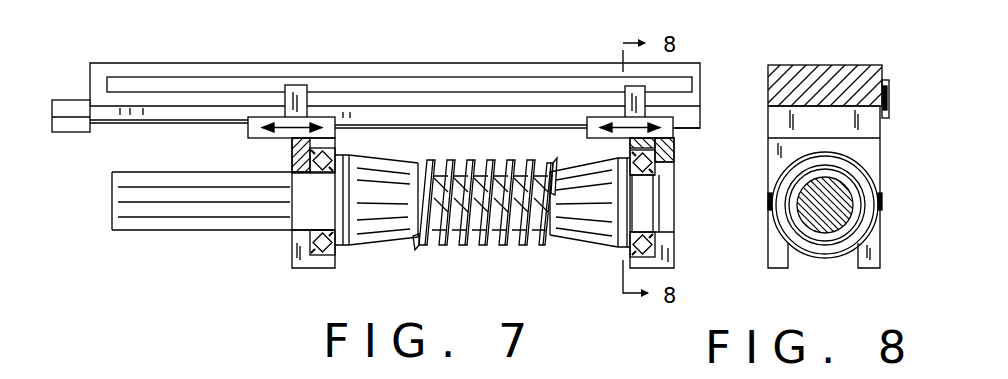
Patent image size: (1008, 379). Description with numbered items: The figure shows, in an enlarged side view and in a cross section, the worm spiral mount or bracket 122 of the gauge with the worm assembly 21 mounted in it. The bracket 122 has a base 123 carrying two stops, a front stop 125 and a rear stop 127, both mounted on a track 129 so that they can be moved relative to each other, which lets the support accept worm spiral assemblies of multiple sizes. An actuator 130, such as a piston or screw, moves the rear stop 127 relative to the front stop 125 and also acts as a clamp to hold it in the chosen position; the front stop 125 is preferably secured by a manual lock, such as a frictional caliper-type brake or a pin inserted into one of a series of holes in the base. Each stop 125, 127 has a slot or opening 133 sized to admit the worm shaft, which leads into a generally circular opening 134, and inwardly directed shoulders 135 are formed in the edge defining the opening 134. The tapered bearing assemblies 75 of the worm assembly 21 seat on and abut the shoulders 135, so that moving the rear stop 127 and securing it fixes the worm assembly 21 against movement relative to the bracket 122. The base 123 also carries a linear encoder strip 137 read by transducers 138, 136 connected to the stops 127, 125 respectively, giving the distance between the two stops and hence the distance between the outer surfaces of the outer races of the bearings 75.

In FIG. 7, the worm assembly 21 is at (491, 252).
In FIG. 7, the tapered bearing assemblies 75 is at (628, 152).
In FIG. 7, the worm spiral mount or bracket 122 is at (185, 50).
In FIG. 7, the base 123 is at (517, 72).
In FIG. 8, the base 123 is at (768, 83).
In FIG. 7, the front stop 125 is at (674, 162).
In FIG. 8, the front stop 125 is at (882, 153).
In FIG. 7, the rear stop 127 is at (292, 145).
In FIG. 7, the track 129 is at (112, 121).
In FIG. 8, the track 129 is at (768, 118).
In FIG. 7, the actuator 130 is at (72, 100).
In FIG. 8, the slot or opening 133 is at (790, 262).
In FIG. 7, the circular opening 134 is at (662, 174).
In FIG. 8, the circular opening 134 is at (880, 180).
In FIG. 7, the shoulders 135 is at (338, 157).
In FIG. 7, the transducer 136 is at (625, 88).
In FIG. 8, the transducer 136 is at (889, 96).
In FIG. 7, the linear encoder strip 137 is at (413, 85).
In FIG. 8, the linear encoder strip 137 is at (884, 80).
In FIG. 7, the transducer 138 is at (296, 86).